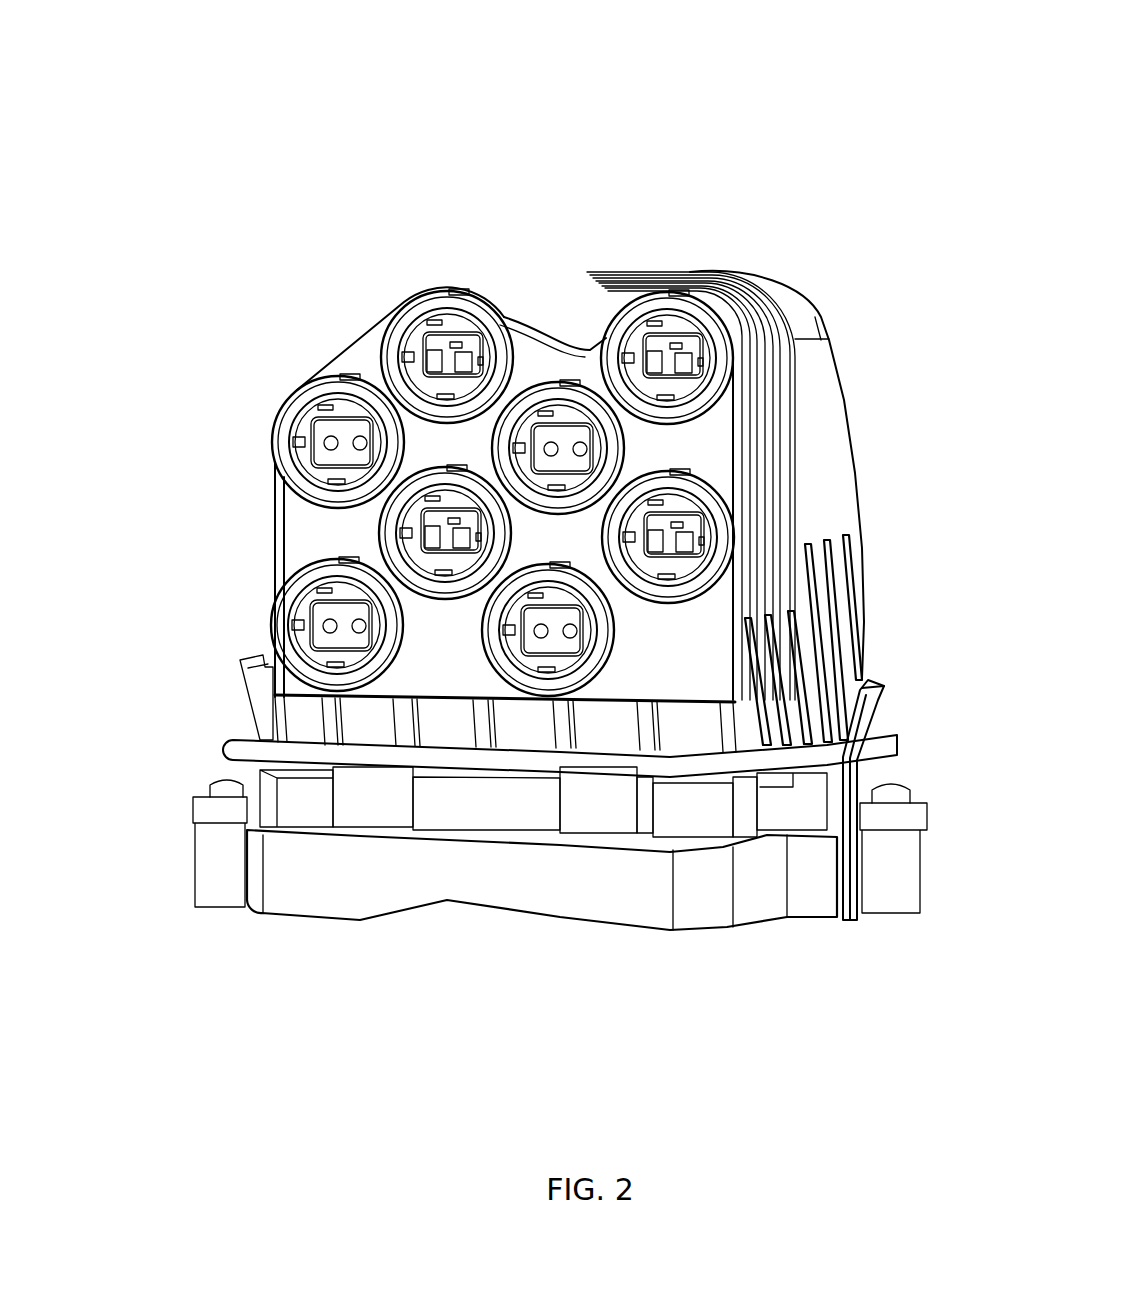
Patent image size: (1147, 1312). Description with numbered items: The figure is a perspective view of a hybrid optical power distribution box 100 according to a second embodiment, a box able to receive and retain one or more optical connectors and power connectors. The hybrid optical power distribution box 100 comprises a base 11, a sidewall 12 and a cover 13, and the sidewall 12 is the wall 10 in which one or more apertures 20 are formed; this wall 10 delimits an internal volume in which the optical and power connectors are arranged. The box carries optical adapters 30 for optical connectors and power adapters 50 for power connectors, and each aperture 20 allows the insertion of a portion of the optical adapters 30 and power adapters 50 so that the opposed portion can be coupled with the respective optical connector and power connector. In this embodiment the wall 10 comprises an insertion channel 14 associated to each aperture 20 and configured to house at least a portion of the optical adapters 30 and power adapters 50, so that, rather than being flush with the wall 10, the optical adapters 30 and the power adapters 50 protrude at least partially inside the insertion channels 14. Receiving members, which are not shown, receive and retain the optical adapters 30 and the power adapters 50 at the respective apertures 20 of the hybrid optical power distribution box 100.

The hybrid optical power distribution box 100 is at (290, 256).
The wall 10 is at (815, 305).
The base 11 is at (325, 905).
The sidewall 12 is at (713, 650).
The cover 13 is at (700, 290).
The insertion channel 14 is at (300, 488).
The aperture 20 is at (506, 680).
The optical adapter 30 is at (433, 346).
The power adapter 50 is at (310, 422).